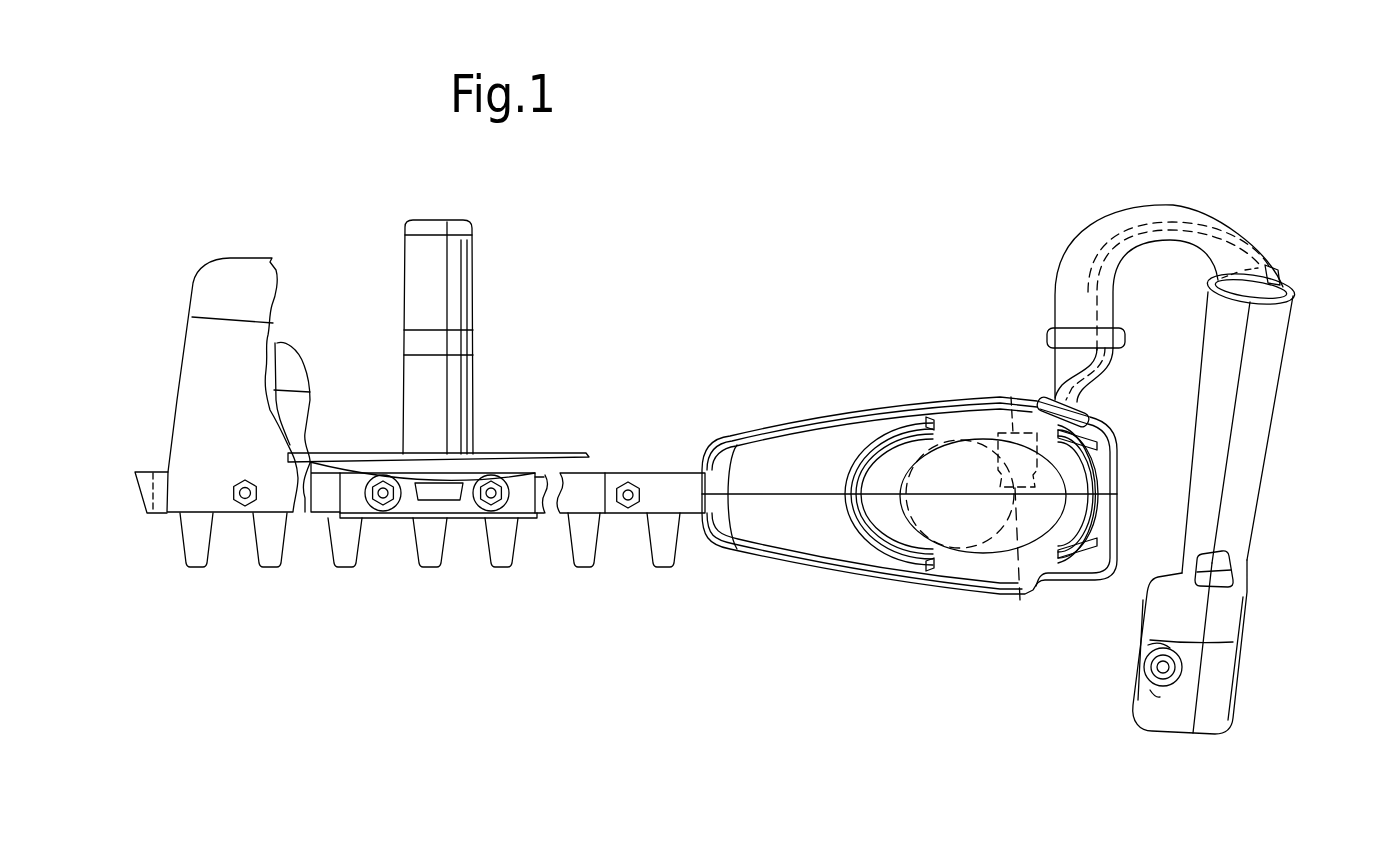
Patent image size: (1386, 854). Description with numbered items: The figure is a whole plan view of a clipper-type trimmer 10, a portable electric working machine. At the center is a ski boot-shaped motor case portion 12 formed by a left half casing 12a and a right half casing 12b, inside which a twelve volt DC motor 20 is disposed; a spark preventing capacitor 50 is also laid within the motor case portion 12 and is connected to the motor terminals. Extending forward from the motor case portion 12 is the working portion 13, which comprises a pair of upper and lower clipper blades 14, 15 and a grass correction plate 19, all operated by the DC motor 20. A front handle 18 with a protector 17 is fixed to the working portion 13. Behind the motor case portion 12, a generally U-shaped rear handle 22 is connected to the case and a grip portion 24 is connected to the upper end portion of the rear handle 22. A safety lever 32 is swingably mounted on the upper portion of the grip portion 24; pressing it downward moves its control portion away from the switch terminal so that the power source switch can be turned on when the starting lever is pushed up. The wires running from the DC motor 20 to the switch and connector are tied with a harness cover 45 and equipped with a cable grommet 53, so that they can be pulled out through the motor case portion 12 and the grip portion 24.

The clipper-type trimmer 10 is at (882, 243).
The motor case portion 12 is at (882, 353).
The left half casing 12a is at (777, 513).
The right half casing 12b is at (838, 438).
The working portion 13 is at (612, 468).
The upper clipper blade 14 is at (430, 580).
The lower clipper blade 15 is at (500, 568).
The protector 17 is at (510, 468).
The front handle 18 is at (462, 278).
The grass correction plate 19 is at (197, 358).
The DC motor 20 is at (1020, 600).
The rear handle 22 is at (1132, 206).
The grip portion 24 is at (1285, 400).
The safety lever 32 is at (1230, 556).
The harness cover 45 is at (1162, 258).
The spark preventing capacitor 50 is at (1011, 396).
The cable grommet 53 is at (1270, 266).